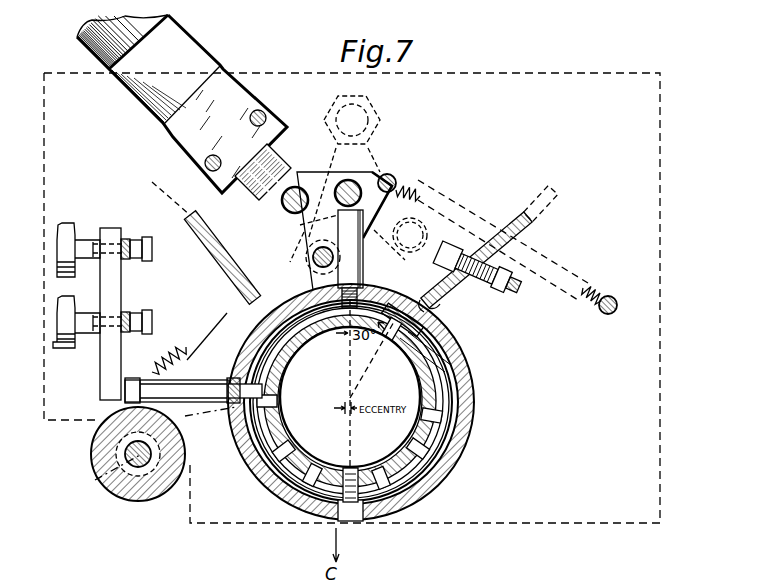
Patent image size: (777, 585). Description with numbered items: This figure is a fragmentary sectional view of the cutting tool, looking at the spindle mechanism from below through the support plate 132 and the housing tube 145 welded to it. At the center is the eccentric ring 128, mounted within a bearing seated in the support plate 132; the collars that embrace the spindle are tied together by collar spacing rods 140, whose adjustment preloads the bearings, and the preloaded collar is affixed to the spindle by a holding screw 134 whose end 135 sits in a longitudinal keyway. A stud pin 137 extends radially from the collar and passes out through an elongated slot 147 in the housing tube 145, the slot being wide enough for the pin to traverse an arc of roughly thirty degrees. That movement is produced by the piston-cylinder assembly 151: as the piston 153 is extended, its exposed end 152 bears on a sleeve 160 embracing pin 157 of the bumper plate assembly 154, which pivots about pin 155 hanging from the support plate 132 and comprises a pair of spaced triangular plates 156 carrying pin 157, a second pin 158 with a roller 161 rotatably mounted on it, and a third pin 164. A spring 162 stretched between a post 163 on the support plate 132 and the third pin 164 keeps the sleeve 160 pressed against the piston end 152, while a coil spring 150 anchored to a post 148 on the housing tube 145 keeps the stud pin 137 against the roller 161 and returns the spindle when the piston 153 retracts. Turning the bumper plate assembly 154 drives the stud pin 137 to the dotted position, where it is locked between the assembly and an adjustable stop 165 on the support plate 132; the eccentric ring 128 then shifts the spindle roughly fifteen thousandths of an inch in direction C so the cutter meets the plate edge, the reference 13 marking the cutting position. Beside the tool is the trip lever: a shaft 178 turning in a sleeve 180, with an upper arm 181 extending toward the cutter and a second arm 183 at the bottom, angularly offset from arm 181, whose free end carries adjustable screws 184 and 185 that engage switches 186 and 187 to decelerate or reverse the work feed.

The direction line 13 is at (478, 216).
The eccentric ring 128 is at (284, 357).
The support plate 132 is at (660, 165).
The holding screw 134 is at (388, 516).
The end of screw 135 is at (351, 466).
The stud pin 137 is at (393, 176).
The collar spacing rods 140 is at (468, 468).
The housing tube 145 is at (477, 440).
The elongated slot 147 is at (442, 300).
The post 148 is at (205, 381).
The coil spring 150 is at (173, 345).
The piston-cylinder assembly 151 is at (137, 110).
The exposed end of piston 152 is at (296, 170).
The piston 153 is at (268, 145).
The bumper plate assembly 154 is at (279, 233).
The pin 155 is at (356, 183).
The triangular-shaped plates 156 is at (312, 172).
The pin 157 is at (282, 205).
The second pin 158 is at (312, 265).
The sleeve 160 is at (240, 186).
The roller 161 is at (305, 256).
The spring 162 is at (592, 288).
The post 163 is at (612, 315).
The third pin 164 is at (423, 187).
The adjustable stop 165 is at (468, 250).
The shaft 178 is at (122, 460).
The sleeve 180 is at (130, 502).
The arm 181 is at (204, 470).
The second arm 183 is at (105, 392).
The adjustable screw 184 is at (142, 311).
The adjustable screw 185 is at (138, 238).
The switch 186 is at (67, 349).
The switch 187 is at (66, 221).